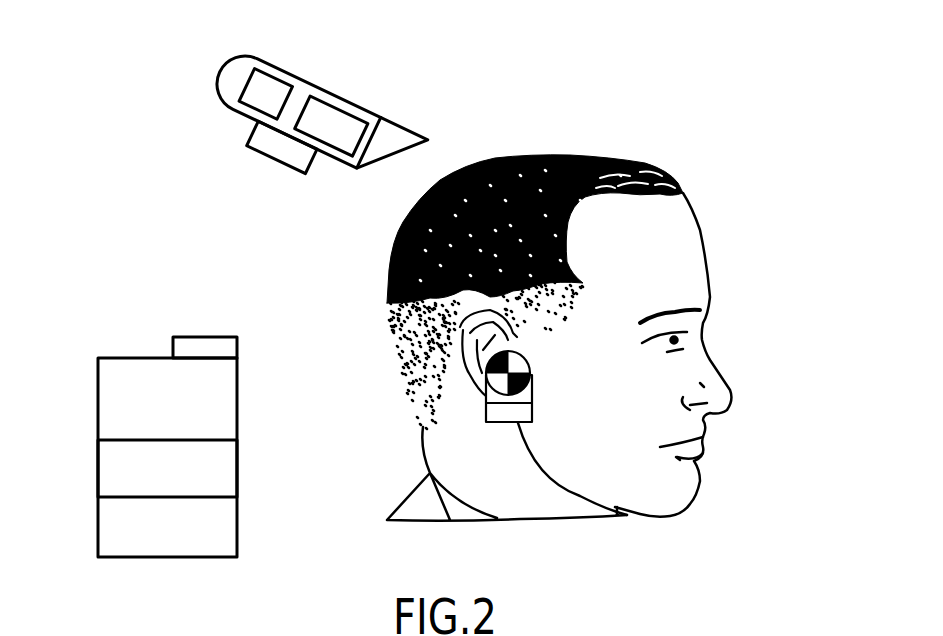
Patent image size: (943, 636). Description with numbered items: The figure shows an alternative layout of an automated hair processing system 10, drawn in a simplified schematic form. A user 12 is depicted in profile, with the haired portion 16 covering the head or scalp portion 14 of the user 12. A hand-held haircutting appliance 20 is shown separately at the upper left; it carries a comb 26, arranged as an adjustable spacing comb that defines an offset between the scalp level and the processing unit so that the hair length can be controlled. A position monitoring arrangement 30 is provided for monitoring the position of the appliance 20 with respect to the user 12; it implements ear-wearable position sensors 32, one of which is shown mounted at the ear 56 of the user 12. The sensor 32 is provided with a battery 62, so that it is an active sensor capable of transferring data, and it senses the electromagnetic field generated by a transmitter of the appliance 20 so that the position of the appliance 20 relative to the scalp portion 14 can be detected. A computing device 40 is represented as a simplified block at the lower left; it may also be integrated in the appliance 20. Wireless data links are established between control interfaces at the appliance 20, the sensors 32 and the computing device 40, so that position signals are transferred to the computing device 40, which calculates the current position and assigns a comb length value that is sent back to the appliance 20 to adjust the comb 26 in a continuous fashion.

The hair processing system 10 is at (572, 260).
The user 12 is at (572, 298).
The head or scalp portion 14 is at (668, 222).
The haired portion 16 is at (542, 157).
The haircutting appliance 20 is at (277, 125).
The comb 26 is at (393, 140).
The position monitoring arrangement 30 is at (572, 298).
The position sensor 32 is at (476, 413).
The computing device 40 is at (145, 416).
The control interface 56 is at (491, 395).
The battery 62 is at (497, 414).